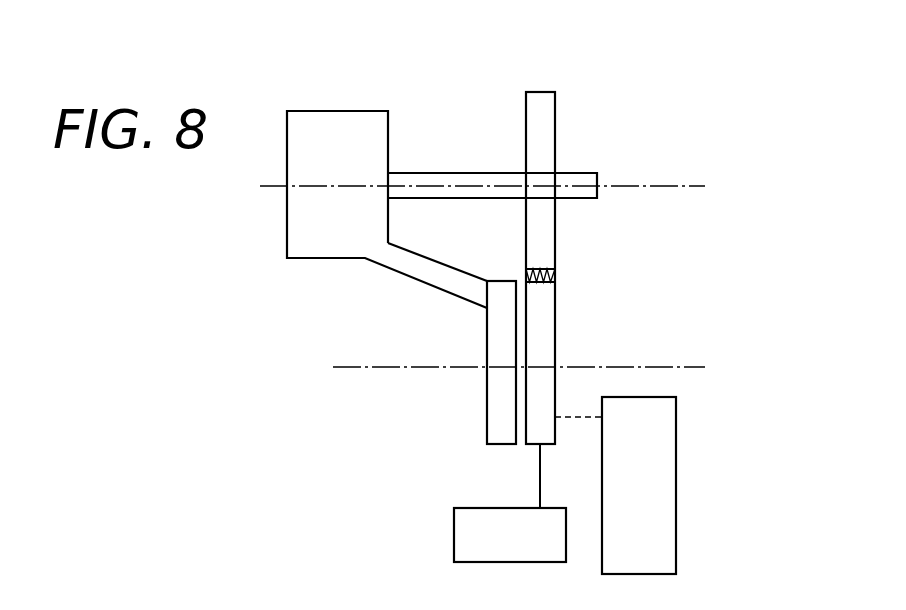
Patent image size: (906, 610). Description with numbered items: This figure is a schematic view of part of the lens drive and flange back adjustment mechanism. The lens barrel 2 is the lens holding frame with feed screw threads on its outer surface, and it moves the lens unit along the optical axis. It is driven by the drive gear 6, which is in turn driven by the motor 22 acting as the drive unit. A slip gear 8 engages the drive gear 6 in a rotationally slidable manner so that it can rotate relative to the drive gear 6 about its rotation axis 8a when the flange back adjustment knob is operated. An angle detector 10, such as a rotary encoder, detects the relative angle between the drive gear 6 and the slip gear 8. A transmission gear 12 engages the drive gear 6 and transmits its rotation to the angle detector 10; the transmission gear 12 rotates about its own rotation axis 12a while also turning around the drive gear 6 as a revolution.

The lens barrel 2 is at (676, 443).
The drive gear 6 is at (548, 300).
The slip gear 8 is at (489, 416).
The rotation axis 8a is at (690, 366).
The angle detector 10 is at (336, 122).
The transmission gear 12 is at (542, 98).
The rotation axis 12a is at (668, 186).
The motor 22 is at (454, 530).